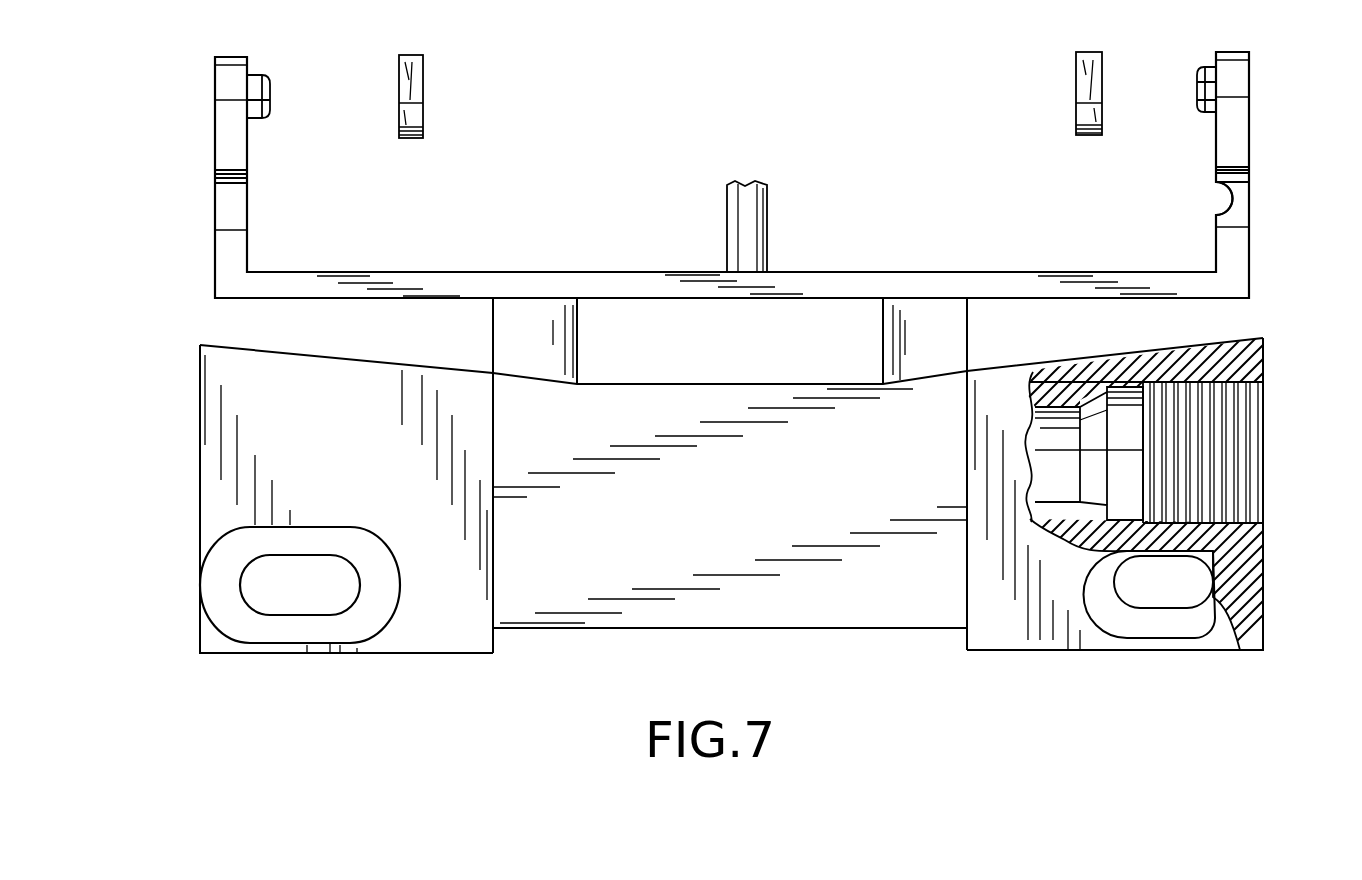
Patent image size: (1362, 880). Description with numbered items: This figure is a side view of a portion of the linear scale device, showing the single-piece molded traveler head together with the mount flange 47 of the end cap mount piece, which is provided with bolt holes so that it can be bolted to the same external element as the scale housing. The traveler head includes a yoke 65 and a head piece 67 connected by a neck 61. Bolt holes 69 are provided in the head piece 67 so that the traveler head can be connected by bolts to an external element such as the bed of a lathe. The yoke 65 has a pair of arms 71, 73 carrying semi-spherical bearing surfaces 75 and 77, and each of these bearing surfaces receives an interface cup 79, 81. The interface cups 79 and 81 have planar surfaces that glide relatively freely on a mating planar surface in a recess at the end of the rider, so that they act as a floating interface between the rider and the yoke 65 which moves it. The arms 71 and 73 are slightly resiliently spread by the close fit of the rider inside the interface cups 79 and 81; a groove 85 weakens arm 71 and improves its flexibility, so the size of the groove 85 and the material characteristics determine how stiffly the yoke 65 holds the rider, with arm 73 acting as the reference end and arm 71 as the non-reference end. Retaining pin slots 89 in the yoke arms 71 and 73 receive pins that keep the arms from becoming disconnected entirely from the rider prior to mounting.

The flange 47 is at (767, 203).
The neck 61 is at (805, 335).
The yoke 65 is at (455, 290).
The head piece 67 is at (738, 523).
The bolt holes 69 is at (1152, 593).
The arm 71 is at (1233, 130).
The arm 73 is at (235, 145).
The semi-spherical bearing surface 75 is at (1197, 90).
The semi-spherical bearing surface 77 is at (270, 90).
The interface cup 79 is at (423, 75).
The interface cup 81 is at (1082, 70).
The groove 85 is at (1230, 202).
The retaining pin slots 89 is at (233, 203).